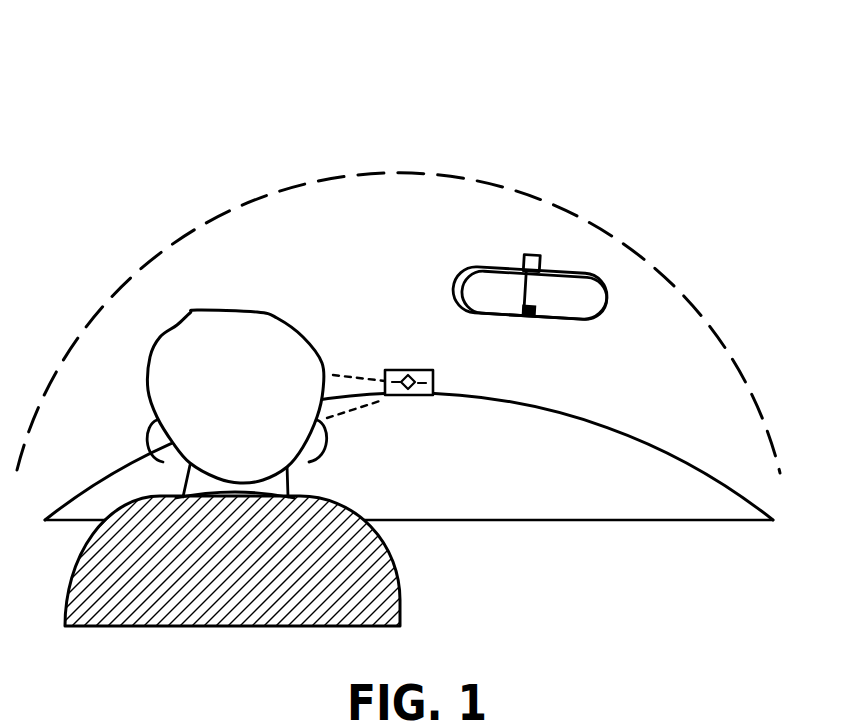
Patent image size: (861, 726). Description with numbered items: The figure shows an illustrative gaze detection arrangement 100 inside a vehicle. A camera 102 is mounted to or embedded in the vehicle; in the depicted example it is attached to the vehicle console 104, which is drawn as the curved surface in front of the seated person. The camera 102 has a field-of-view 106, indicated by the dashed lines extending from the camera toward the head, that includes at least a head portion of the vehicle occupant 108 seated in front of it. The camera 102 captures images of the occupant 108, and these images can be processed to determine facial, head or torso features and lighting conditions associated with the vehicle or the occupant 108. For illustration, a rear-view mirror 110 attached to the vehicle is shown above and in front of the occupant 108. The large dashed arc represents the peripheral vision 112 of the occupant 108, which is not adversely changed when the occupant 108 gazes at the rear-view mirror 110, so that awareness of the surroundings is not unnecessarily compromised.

The gaze detection arrangement 100 is at (390, 315).
The camera 102 is at (435, 381).
The vehicle console 104 is at (488, 473).
The field-of-view 106 is at (353, 410).
The vehicle occupant 108 is at (340, 481).
The rear-view mirror 110 is at (487, 244).
The peripheral vision 112 is at (577, 211).